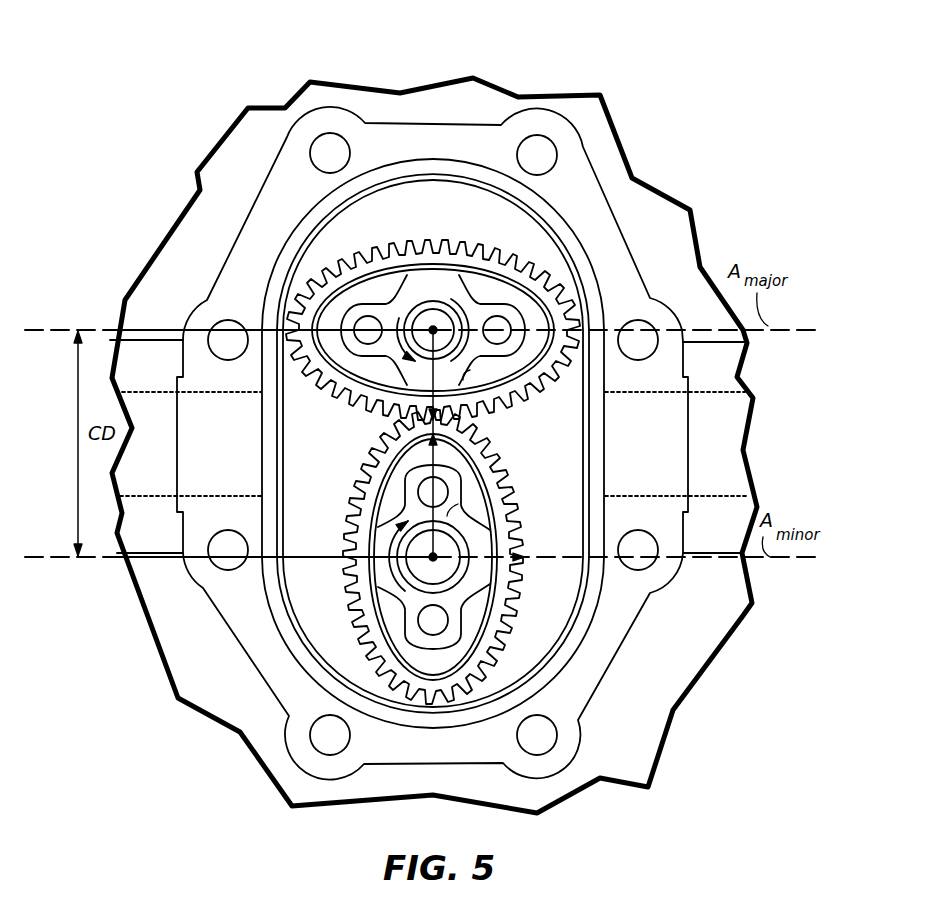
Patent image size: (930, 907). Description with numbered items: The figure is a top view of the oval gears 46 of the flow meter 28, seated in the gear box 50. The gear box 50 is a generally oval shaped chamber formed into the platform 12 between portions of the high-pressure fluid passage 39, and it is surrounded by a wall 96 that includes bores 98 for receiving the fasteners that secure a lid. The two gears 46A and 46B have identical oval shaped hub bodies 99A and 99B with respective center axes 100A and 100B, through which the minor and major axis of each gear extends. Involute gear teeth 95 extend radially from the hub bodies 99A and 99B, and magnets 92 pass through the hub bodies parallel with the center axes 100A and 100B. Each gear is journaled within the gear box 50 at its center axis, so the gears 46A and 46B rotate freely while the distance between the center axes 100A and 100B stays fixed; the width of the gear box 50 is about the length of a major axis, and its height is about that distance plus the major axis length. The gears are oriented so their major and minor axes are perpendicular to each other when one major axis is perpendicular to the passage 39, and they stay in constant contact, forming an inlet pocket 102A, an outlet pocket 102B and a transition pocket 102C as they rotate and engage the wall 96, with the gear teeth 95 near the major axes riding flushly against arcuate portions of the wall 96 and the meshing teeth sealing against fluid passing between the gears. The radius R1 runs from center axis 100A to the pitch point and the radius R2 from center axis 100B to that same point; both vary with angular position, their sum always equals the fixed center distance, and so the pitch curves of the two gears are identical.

The platform 12 is at (722, 607).
The flow meter 28 is at (262, 175).
The high-pressure fluid passage 39 is at (208, 393).
The oval gears 46 is at (433, 369).
The gear 46A is at (373, 325).
The gear 46B is at (359, 557).
The gear box 50 is at (480, 210).
The magnets 92 is at (352, 325).
The involute gear teeth 95 is at (384, 240).
The wall 96 is at (587, 678).
The bores 98 is at (313, 152).
The hub body 99A is at (343, 372).
The hub body 99B is at (372, 502).
The center axis 100A is at (446, 322).
The center axis 100B is at (443, 565).
The inlet pocket 102A is at (588, 583).
The outlet pocket 102B is at (354, 451).
The transition pocket 102C is at (460, 203).
The radius R1 is at (476, 372).
The radius R2 is at (467, 505).